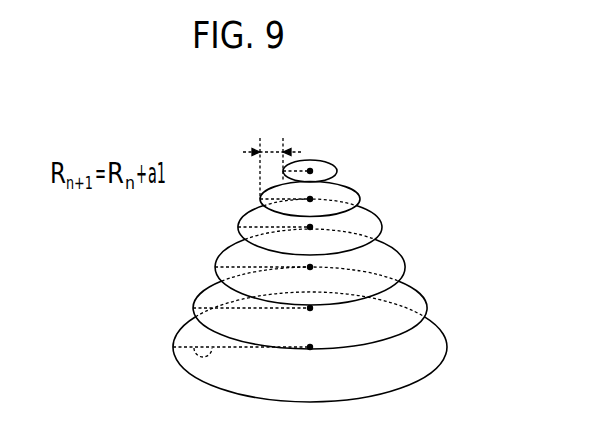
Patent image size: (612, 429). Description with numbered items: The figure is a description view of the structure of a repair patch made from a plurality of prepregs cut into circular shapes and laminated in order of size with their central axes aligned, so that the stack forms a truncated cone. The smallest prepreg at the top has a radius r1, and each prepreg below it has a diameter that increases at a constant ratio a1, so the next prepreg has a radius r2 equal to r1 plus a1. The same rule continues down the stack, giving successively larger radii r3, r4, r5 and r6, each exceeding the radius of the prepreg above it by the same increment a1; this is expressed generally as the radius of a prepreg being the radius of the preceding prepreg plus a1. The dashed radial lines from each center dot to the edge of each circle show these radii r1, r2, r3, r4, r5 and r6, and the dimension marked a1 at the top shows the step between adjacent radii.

The radius of the prepreg with the smallest diameter r1 is at (299, 162).
The radius of the second prepreg r2 is at (268, 209).
The radius of the third prepreg r3 is at (250, 242).
The radius of the fourth prepreg r4 is at (226, 284).
The radius of the fifth prepreg r5 is at (201, 324).
The radius of the sixth prepreg r6 is at (178, 363).
The constant ratio of diameter increase a1 is at (275, 150).